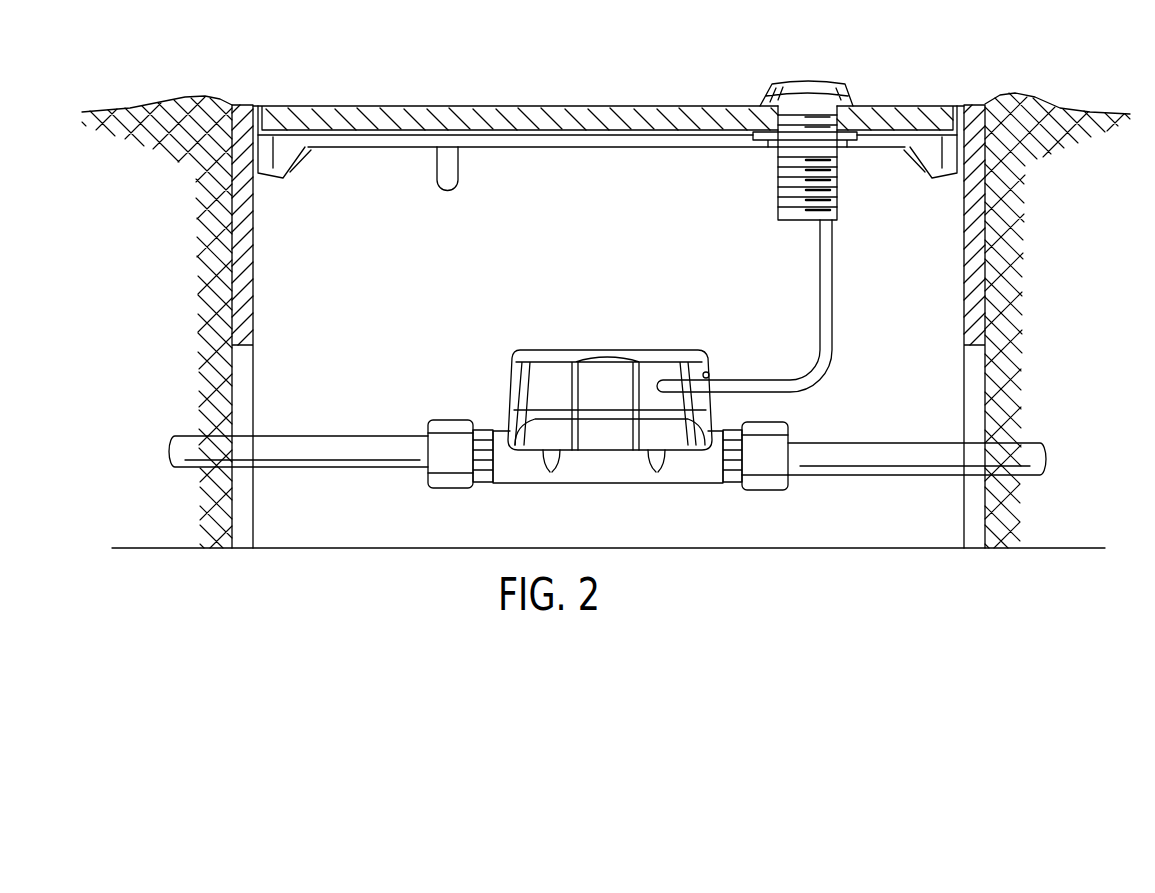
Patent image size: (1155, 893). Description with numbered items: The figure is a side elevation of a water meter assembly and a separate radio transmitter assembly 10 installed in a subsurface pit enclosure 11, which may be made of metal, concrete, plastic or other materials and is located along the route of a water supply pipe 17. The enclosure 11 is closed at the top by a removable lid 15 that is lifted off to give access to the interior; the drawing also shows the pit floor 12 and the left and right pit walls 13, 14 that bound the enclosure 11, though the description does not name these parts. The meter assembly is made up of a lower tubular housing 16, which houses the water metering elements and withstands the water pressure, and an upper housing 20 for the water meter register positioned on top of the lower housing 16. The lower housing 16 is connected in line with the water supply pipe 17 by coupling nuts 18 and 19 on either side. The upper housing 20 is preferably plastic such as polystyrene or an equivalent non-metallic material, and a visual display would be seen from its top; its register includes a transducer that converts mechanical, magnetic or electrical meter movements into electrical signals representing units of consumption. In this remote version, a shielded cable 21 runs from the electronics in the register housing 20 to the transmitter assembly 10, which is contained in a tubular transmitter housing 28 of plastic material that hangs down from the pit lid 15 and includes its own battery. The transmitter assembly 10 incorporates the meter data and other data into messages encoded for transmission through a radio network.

The radio transmitter assembly 10 is at (838, 83).
The subsurface pit enclosure 11 is at (383, 102).
The floor of pit 12 is at (337, 548).
The left pit wall 13 is at (255, 272).
The right pit wall 14 is at (965, 258).
The lid 15 is at (535, 150).
The lower tubular housing 16 is at (670, 452).
The water supply pipe 17 is at (350, 435).
The coupling nut 18 is at (452, 490).
The coupling nut 19 is at (772, 492).
The upper housing 20 is at (535, 352).
The shielded cable 21 is at (818, 280).
The tubular transmitter housing 28 is at (776, 164).